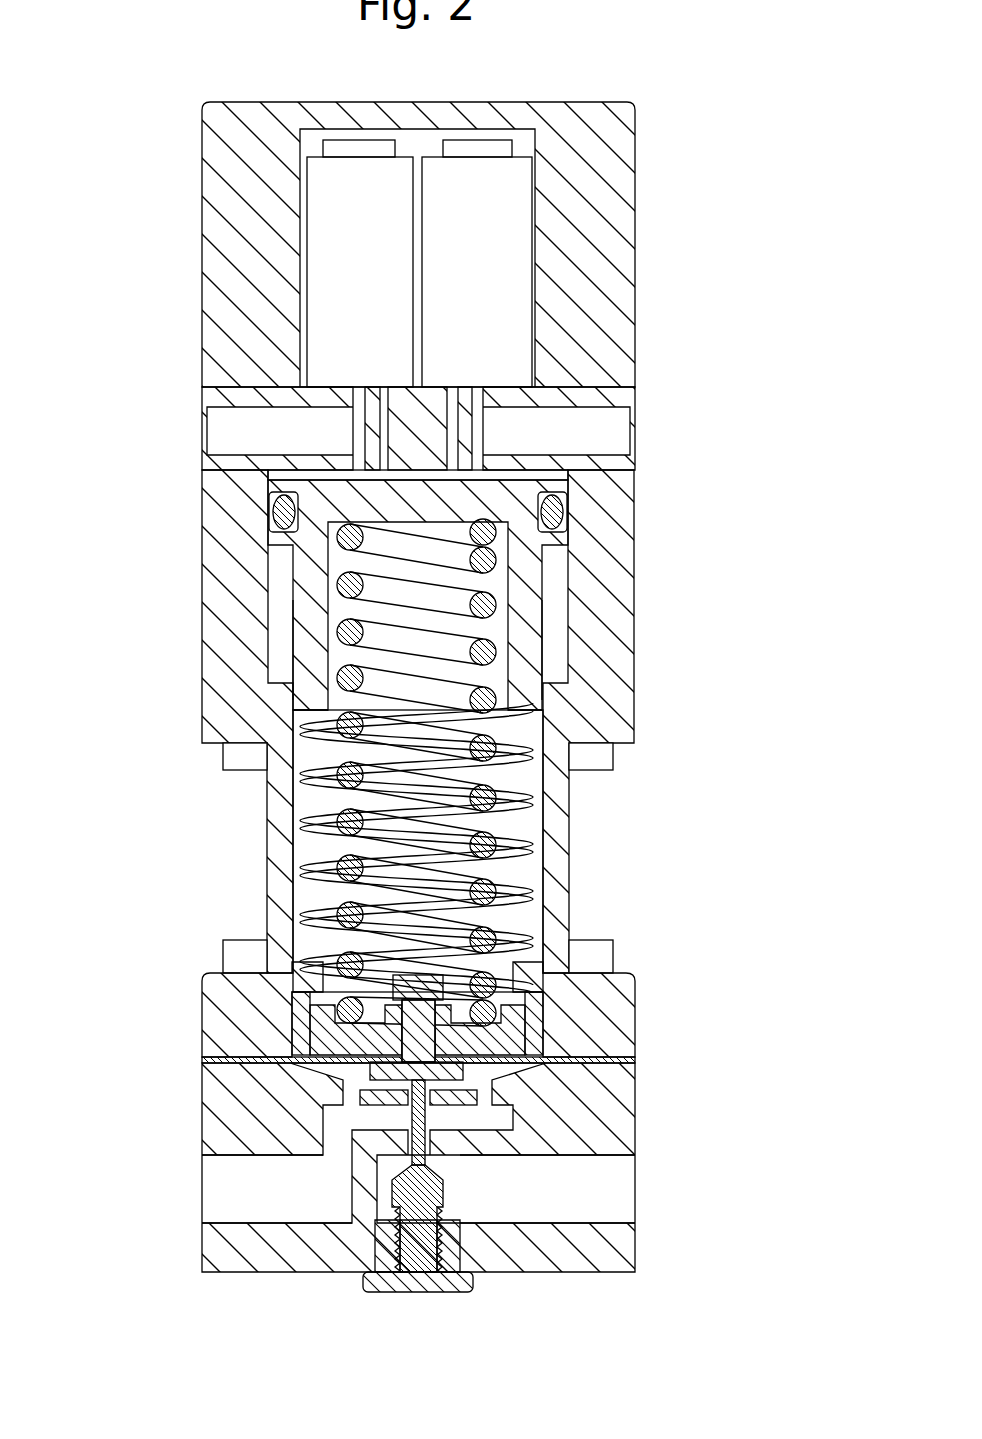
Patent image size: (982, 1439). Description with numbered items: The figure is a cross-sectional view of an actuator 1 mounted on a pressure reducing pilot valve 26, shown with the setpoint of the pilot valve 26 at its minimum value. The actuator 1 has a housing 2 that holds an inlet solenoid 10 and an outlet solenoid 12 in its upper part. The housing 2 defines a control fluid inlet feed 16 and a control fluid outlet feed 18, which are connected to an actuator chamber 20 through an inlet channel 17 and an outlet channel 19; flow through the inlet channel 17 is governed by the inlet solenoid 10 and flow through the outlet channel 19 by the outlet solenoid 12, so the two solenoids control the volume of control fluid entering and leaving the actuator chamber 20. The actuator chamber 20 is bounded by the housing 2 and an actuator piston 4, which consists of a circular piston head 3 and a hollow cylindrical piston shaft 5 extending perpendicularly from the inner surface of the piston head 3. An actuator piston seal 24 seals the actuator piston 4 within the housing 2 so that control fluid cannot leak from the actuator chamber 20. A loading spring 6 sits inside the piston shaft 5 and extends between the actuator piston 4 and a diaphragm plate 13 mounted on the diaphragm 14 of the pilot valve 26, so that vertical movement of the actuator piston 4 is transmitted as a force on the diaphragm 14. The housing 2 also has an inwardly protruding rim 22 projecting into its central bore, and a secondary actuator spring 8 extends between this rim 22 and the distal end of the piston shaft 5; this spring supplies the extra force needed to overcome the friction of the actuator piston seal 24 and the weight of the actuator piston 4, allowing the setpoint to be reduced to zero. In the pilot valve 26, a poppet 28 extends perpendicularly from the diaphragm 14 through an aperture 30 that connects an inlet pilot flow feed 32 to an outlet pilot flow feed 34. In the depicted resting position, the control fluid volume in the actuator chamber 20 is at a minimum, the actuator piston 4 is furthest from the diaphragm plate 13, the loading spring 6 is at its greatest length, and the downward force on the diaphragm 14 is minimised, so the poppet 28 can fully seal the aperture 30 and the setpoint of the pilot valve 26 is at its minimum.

The actuator 1 is at (700, 148).
The housing 2 is at (557, 812).
The piston head 3 is at (392, 500).
The actuator piston 4 is at (530, 597).
The piston shaft 5 is at (527, 677).
The loading spring 6 is at (443, 883).
The secondary actuator spring 8 is at (318, 857).
The inlet solenoid 10 is at (363, 153).
The outlet solenoid 12 is at (482, 152).
The diaphragm plate 13 is at (343, 1038).
The diaphragm 14 is at (558, 1065).
The control fluid inlet feed 16 is at (268, 430).
The inlet channel 17 is at (388, 425).
The control fluid outlet feed 18 is at (583, 432).
The outlet channel 19 is at (452, 412).
The actuator chamber 20 is at (557, 474).
The inwardly protruding rim 22 is at (312, 980).
The actuator piston seal 24 is at (283, 510).
The pilot valve 26 is at (728, 1142).
The poppet 28 is at (438, 1178).
The aperture 30 is at (410, 1162).
The inlet pilot flow feed 32 is at (245, 1190).
The outlet pilot flow feed 34 is at (608, 1193).